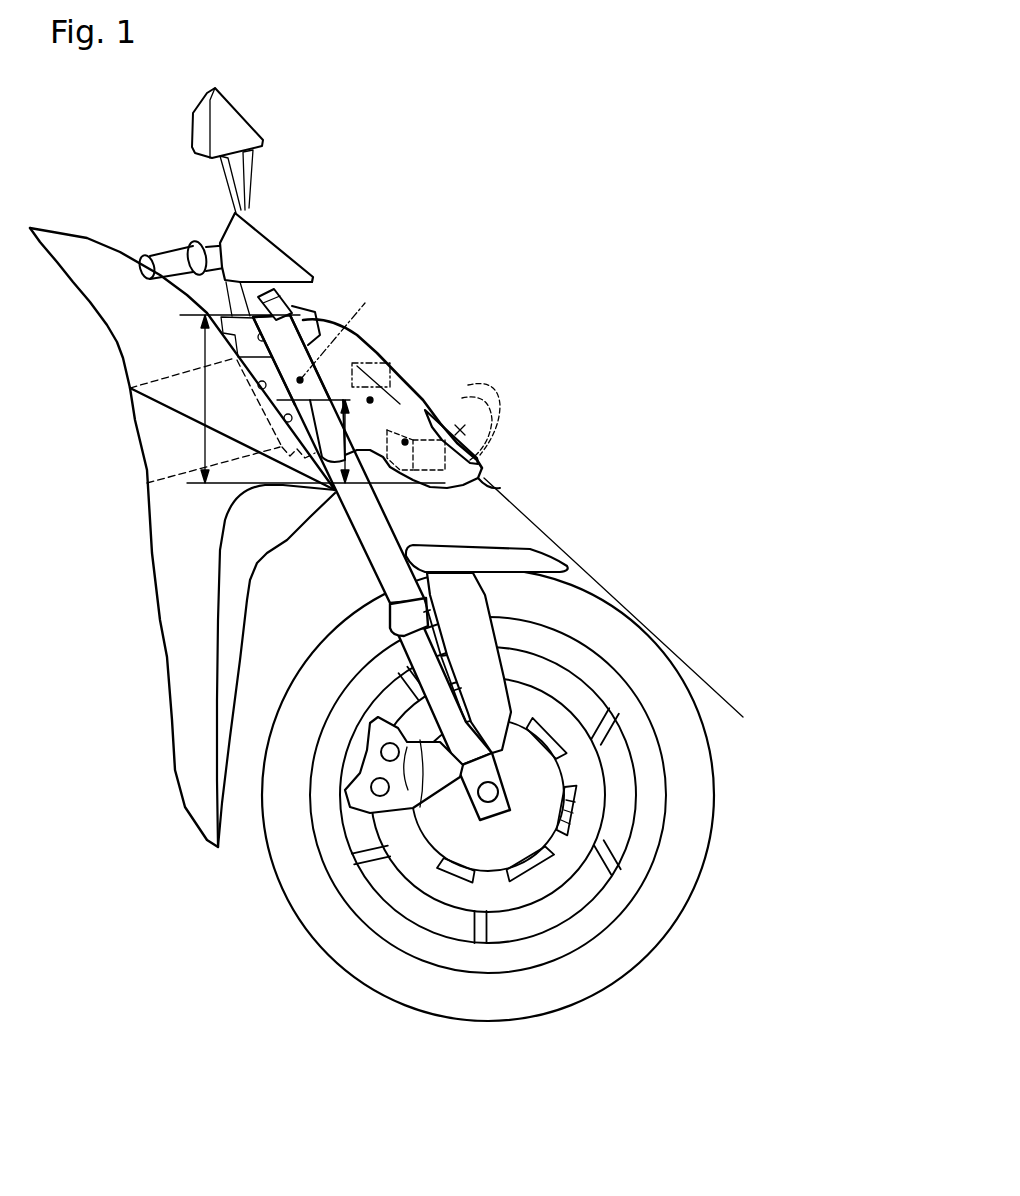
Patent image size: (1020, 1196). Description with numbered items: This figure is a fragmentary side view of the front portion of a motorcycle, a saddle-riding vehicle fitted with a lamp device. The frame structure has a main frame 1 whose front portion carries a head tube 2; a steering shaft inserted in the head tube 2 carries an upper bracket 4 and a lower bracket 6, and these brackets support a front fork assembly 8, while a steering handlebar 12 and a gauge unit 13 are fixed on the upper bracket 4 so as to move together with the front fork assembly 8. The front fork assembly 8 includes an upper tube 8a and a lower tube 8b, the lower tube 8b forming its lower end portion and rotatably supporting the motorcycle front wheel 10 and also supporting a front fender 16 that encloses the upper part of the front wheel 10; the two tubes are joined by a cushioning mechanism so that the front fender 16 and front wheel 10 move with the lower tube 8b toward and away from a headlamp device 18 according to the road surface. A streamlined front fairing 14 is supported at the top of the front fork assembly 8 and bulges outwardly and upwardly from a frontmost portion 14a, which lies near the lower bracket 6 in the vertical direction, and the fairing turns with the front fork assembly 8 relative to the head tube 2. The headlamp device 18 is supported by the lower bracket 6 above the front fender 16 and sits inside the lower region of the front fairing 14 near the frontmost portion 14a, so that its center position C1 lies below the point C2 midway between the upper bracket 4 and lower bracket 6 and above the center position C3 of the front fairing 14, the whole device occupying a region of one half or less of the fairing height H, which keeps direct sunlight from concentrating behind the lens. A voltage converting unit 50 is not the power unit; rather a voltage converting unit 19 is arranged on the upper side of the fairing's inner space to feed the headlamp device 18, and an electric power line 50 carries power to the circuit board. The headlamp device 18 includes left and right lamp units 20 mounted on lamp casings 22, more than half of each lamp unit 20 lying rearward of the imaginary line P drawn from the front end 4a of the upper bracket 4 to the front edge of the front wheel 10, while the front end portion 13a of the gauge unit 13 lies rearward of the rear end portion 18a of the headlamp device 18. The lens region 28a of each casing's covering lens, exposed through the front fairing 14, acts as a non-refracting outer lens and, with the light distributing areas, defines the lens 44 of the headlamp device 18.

The main frame 1 is at (167, 376).
The head tube 2 is at (325, 318).
The upper bracket 4 is at (272, 290).
The front end of the upper bracket 4a is at (292, 306).
The lower bracket 6 is at (335, 498).
The front fork assembly 8 is at (443, 687).
The upper tube 8a is at (370, 553).
The lower tube 8b is at (413, 653).
The motorcycle front wheel 10 is at (300, 902).
The steering handlebar 12 is at (175, 258).
The gauge unit 13 is at (253, 232).
The front end portion of the gauge unit 13a is at (316, 278).
The front fairing 14 is at (453, 385).
The frontmost portion 14a is at (503, 483).
The front fender 16 is at (535, 565).
The headlamp device 18 is at (479, 415).
The rear end portion of the headlamp device 18a is at (380, 477).
The voltage converting unit 19 is at (357, 363).
The lamp unit 20 is at (494, 428).
The lamp casing 22 is at (485, 384).
The lens region 28a is at (514, 439).
The lens 44 is at (484, 460).
The electric power line 50 is at (430, 408).
The center position of the headlamp device C1 is at (407, 440).
The point intermediate between the upper bracket and the lower bracket C2 is at (342, 337).
The center position of the front fairing C3 is at (370, 398).
The imaginary line P is at (590, 570).
The height of the front fairing H is at (362, 424).